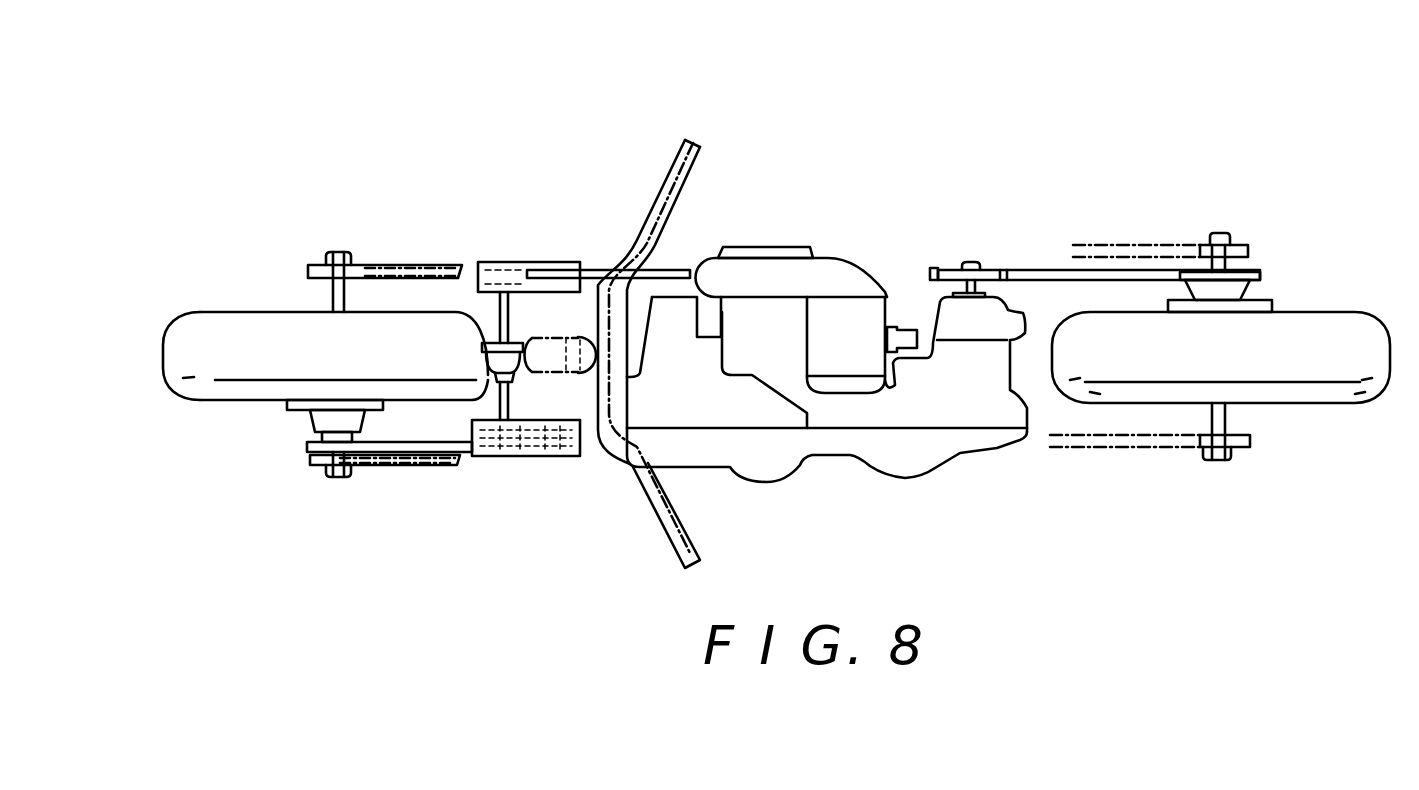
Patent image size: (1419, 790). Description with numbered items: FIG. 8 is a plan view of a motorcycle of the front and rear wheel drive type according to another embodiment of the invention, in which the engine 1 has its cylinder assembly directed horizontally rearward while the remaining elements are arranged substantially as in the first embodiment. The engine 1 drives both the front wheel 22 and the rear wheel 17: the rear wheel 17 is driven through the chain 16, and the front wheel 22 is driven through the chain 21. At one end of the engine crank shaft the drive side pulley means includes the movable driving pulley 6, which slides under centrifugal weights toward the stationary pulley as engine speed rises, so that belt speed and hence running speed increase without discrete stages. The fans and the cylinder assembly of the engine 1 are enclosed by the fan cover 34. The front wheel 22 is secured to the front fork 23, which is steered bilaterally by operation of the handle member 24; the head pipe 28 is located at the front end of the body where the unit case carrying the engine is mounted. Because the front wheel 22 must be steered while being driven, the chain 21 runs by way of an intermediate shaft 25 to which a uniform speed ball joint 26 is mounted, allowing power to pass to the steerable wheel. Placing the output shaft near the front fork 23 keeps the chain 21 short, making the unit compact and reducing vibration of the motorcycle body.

The engine 1 is at (767, 318).
The movable driving pulley 6 is at (838, 413).
The chain 16 is at (1039, 273).
The rear wheel 17 is at (1310, 323).
The chain 21 is at (582, 268).
The front wheel 22 is at (247, 378).
The front fork 23 is at (366, 262).
The handle member 24 is at (698, 146).
The intermediate shaft 25 is at (493, 282).
The uniform speed ball joint 26 is at (481, 362).
The head pipe 28 is at (555, 335).
The fan cover 34 is at (856, 320).